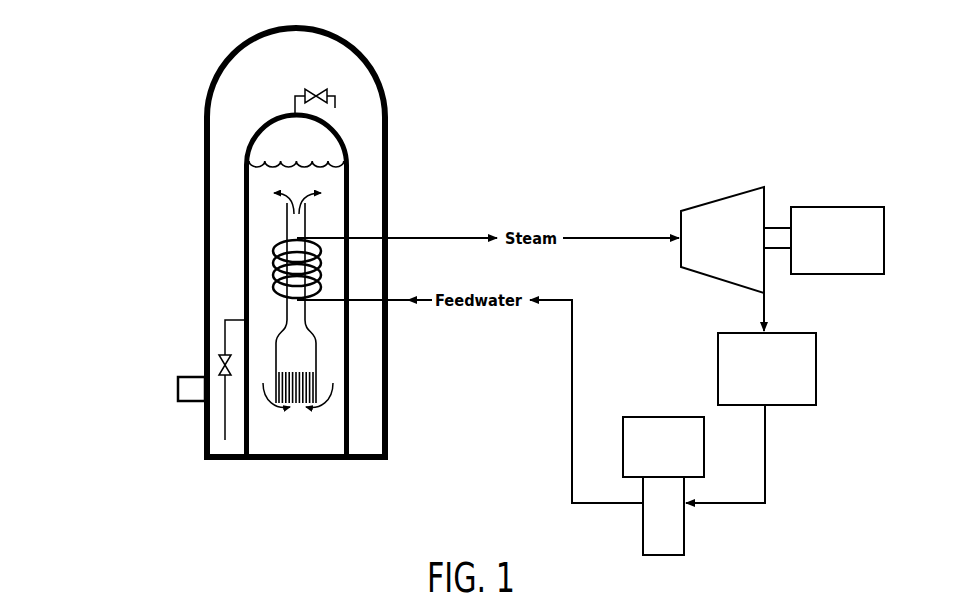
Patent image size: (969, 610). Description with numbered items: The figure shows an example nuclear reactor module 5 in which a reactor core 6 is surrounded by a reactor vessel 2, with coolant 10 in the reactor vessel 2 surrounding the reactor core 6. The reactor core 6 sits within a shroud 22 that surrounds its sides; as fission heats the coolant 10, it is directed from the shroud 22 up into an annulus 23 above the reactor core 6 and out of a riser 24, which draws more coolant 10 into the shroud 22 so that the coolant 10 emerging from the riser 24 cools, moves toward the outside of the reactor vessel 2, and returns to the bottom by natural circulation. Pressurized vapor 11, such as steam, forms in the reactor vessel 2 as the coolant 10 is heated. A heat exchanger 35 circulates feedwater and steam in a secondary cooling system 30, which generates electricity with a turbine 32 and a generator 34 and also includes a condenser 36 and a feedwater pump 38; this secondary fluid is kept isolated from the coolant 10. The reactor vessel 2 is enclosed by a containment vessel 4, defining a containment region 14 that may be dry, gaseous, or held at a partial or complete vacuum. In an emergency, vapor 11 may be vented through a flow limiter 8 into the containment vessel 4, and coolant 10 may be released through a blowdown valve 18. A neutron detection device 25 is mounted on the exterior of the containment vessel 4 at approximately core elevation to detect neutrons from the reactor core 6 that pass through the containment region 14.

The reactor vessel 2 is at (355, 178).
The containment vessel 4 is at (392, 127).
The nuclear reactor module 5 is at (186, 120).
The reactor core 6 is at (327, 378).
The flow limiter 8 is at (320, 88).
The coolant 10 is at (280, 176).
The pressurized vapor 11 is at (287, 140).
The containment region 14 is at (280, 87).
The blowdown valve 18 is at (215, 367).
The shroud 22 is at (323, 353).
The annulus 23 is at (315, 327).
The riser 24 is at (315, 222).
The neutron detection device 25 is at (175, 387).
The secondary cooling system 30 is at (717, 173).
The turbine 32 is at (735, 251).
The generator 34 is at (855, 251).
The heat exchanger 35 is at (264, 262).
The condenser 36 is at (775, 387).
The feedwater pump 38 is at (677, 456).